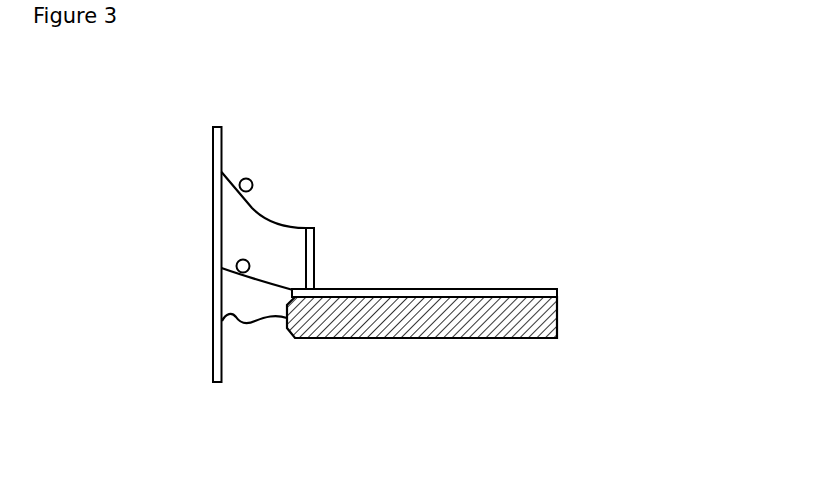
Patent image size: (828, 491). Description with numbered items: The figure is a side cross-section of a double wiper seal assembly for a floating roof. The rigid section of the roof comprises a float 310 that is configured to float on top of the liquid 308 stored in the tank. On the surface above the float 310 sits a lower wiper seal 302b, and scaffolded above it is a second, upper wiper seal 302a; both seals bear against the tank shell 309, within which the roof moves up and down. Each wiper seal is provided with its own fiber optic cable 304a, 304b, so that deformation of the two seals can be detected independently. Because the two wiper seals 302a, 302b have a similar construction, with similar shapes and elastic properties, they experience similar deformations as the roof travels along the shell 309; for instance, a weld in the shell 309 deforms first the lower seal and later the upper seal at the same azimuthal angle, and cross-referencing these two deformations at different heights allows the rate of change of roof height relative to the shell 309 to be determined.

The liquid 308 is at (242, 330).
The upper wiper seal 302a is at (250, 210).
The lower wiper seal 302b is at (218, 270).
The fiber optic cable 304a is at (246, 178).
The fiber optic cable 304b is at (236, 266).
The shell 309 is at (215, 305).
The float 310 is at (537, 316).